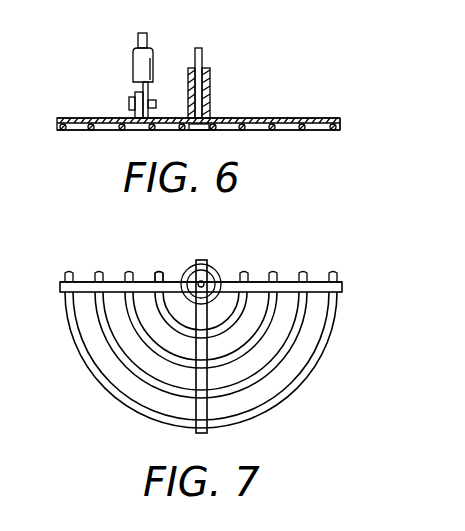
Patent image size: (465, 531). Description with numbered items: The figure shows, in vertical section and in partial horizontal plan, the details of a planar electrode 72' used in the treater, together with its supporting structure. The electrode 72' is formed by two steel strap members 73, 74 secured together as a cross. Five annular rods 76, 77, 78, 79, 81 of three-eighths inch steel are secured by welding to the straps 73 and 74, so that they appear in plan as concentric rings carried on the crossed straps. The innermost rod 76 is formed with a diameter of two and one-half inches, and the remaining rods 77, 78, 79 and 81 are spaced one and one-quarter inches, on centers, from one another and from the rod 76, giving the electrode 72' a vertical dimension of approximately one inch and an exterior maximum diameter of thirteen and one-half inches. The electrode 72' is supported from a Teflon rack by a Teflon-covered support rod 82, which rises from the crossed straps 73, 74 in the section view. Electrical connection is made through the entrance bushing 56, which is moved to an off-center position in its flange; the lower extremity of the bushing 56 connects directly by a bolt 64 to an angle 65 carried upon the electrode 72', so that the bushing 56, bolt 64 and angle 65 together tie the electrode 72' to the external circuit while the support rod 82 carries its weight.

In FIG. 6, the entrance bushing 56 is at (134, 64).
In FIG. 6, the bolt 64 is at (154, 74).
In FIG. 6, the angle 65 is at (123, 119).
In FIG. 6, the planar electrode 72' is at (193, 107).
In FIG. 7, the planar electrode 72' is at (223, 320).
In FIG. 7, the steel strap member 73 is at (150, 303).
In FIG. 7, the steel strap member 74 is at (340, 300).
In FIG. 6, the annular rod 76 is at (218, 121).
In FIG. 7, the annular rod 76 is at (208, 262).
In FIG. 6, the annular rod 77 is at (250, 120).
In FIG. 7, the annular rod 77 is at (157, 342).
In FIG. 6, the annular rod 78 is at (120, 133).
In FIG. 7, the annular rod 78 is at (173, 362).
In FIG. 6, the annular rod 79 is at (298, 132).
In FIG. 7, the annular rod 79 is at (247, 387).
In FIG. 6, the annular rod 81 is at (333, 124).
In FIG. 7, the annular rod 81 is at (293, 386).
In FIG. 6, the support rod 82 is at (204, 52).
In FIG. 7, the support rod 82 is at (187, 280).